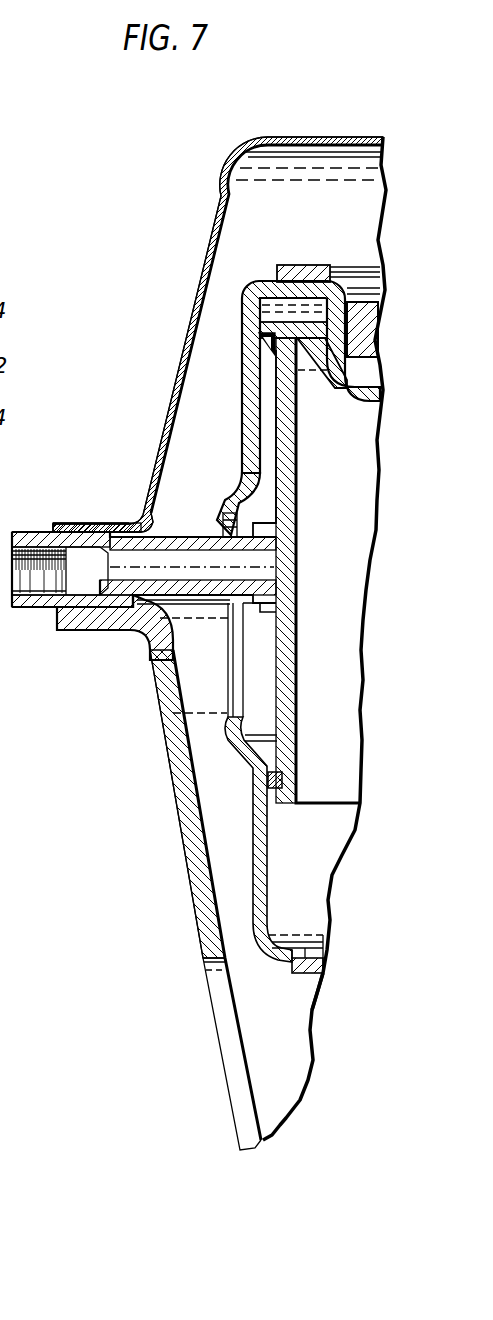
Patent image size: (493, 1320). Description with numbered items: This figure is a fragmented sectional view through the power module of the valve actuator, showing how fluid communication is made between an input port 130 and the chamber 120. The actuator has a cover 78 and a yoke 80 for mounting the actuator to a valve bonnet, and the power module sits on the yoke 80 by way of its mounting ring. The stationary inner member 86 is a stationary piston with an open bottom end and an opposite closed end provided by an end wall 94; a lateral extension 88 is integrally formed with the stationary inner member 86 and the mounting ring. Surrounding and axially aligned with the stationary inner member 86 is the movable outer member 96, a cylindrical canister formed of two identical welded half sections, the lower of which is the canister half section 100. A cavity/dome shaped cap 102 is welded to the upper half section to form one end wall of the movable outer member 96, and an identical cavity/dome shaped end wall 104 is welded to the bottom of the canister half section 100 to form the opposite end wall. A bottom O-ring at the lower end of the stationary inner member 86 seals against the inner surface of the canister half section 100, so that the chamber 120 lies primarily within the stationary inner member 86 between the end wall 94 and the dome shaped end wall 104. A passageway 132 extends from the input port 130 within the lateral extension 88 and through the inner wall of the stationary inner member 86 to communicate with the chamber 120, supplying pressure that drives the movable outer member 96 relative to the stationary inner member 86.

The cover 78 is at (298, 137).
The yoke 80 is at (177, 856).
The stationary inner member 86 is at (276, 640).
The lateral extension 88 is at (118, 633).
The end wall 94 is at (386, 404).
The movable outer member 96 is at (252, 826).
The canister half section 100 is at (283, 935).
The cavity/dome shaped cap 102 is at (371, 371).
The cavity/dome shaped end wall 104 is at (318, 1000).
The chamber 120 is at (329, 556).
The input port 130 is at (13, 560).
The passageway 132 is at (152, 512).